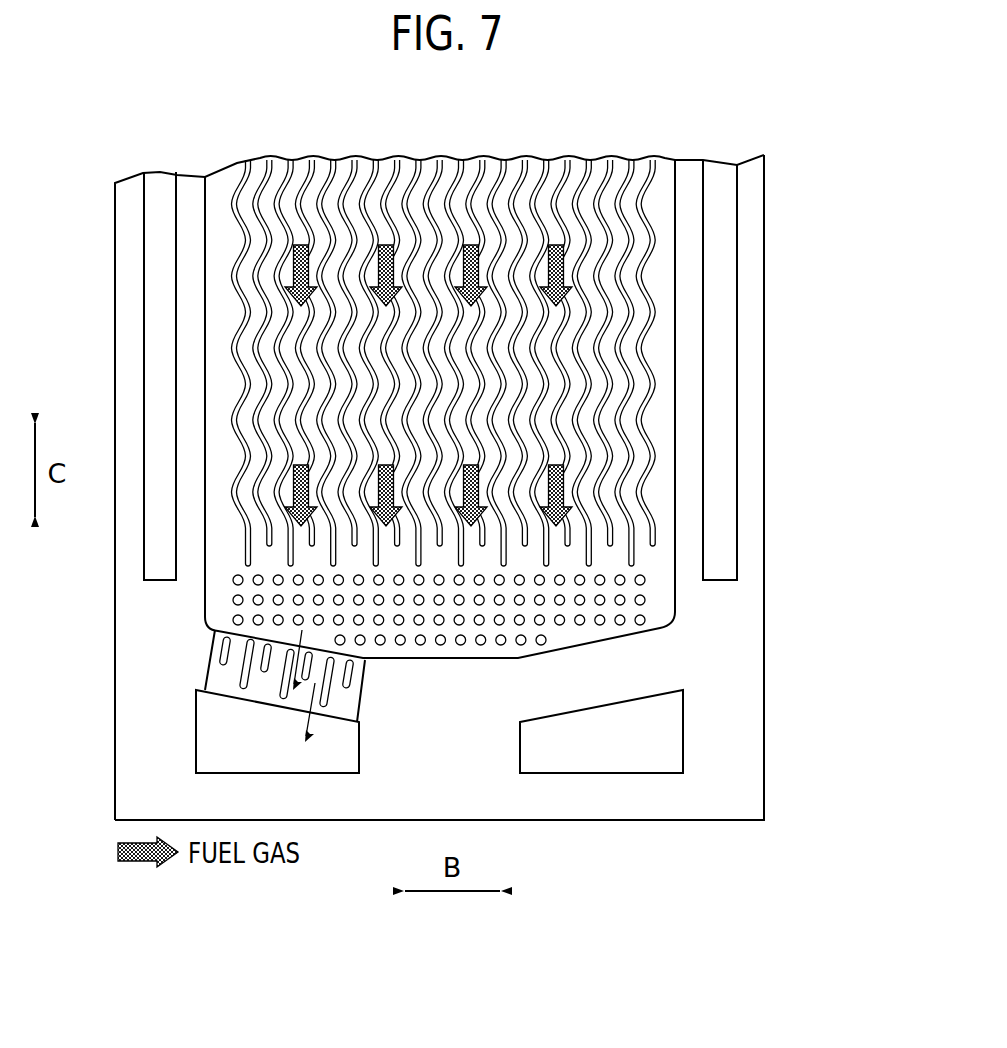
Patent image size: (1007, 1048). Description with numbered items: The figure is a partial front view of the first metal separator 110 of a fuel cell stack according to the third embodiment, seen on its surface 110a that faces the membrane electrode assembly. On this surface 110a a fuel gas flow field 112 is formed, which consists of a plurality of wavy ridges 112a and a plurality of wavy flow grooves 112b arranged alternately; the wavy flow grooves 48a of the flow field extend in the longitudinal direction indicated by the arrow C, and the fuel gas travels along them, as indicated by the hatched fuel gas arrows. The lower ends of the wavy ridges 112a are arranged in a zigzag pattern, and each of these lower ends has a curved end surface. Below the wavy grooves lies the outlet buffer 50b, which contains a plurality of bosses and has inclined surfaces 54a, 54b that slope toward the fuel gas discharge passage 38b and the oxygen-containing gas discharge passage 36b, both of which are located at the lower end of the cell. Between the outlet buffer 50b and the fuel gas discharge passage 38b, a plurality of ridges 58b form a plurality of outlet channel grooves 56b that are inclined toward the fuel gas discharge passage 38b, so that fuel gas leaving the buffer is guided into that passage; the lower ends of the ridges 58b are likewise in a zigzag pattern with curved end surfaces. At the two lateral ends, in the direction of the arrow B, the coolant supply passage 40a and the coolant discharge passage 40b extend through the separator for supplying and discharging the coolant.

The first metal separator 110 is at (718, 122).
The surface 110a is at (723, 748).
The coolant supply passage 40a is at (152, 223).
The coolant discharge passage 40b is at (725, 312).
The fuel gas flow field 112 is at (610, 263).
The wavy ridges 112a is at (650, 543).
The wavy flow grooves 112b is at (638, 540).
The wavy flow grooves 48a is at (592, 458).
The outlet buffer 50b is at (492, 638).
The inclined surface 54a is at (257, 645).
The inclined surface 54b is at (622, 640).
The outlet channel grooves 56b is at (252, 683).
The ridges 58b is at (325, 700).
The fuel gas discharge passage 38b is at (277, 731).
The oxygen-containing gas discharge passage 36b is at (601, 731).